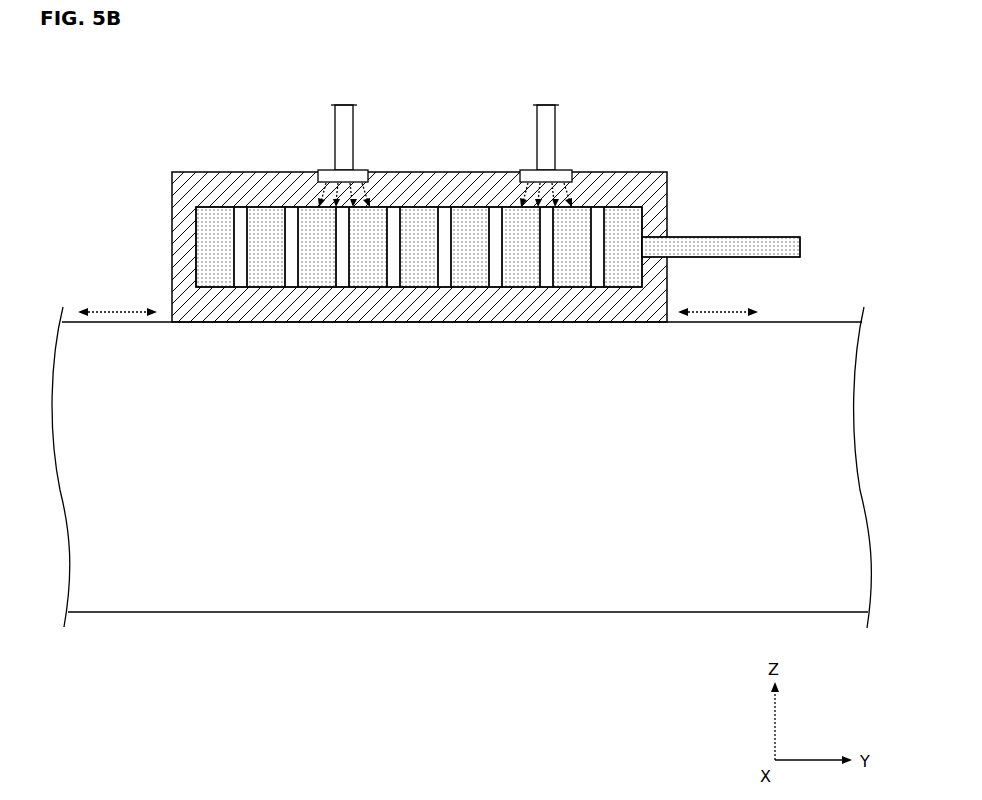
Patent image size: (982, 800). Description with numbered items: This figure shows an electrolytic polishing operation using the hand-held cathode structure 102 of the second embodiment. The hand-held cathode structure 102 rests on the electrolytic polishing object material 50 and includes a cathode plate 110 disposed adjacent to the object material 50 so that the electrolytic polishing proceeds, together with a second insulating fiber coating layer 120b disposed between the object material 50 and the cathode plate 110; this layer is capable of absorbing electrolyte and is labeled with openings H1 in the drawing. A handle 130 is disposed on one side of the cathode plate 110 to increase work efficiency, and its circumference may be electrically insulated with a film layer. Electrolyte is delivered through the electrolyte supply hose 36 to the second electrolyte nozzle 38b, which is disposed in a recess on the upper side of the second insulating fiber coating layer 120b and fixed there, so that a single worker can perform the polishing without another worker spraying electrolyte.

The electrolyte supply hose 36 is at (542, 123).
The second electrolyte nozzle 38b is at (530, 170).
The electrolytic polishing object material 50 is at (851, 307).
The hand-held cathode structure 102 is at (415, 193).
The second insulating fiber coating layer 120b is at (592, 180).
The hole H1 is at (597, 217).
The cathode plate 110 is at (623, 217).
The handle 130 is at (721, 180).